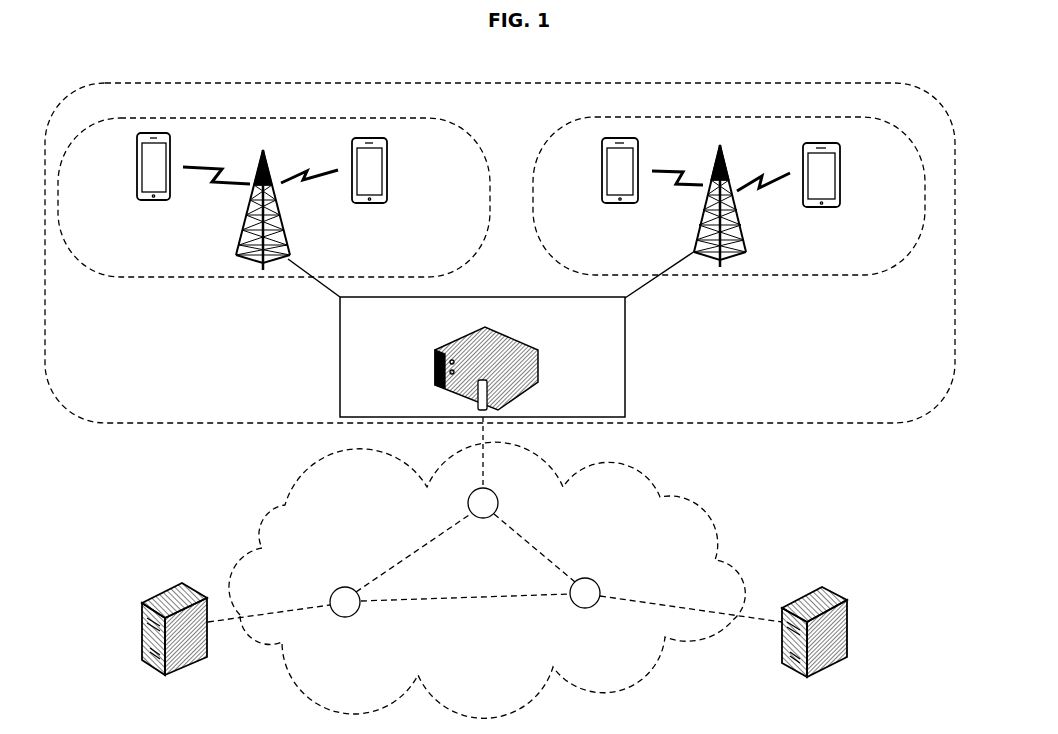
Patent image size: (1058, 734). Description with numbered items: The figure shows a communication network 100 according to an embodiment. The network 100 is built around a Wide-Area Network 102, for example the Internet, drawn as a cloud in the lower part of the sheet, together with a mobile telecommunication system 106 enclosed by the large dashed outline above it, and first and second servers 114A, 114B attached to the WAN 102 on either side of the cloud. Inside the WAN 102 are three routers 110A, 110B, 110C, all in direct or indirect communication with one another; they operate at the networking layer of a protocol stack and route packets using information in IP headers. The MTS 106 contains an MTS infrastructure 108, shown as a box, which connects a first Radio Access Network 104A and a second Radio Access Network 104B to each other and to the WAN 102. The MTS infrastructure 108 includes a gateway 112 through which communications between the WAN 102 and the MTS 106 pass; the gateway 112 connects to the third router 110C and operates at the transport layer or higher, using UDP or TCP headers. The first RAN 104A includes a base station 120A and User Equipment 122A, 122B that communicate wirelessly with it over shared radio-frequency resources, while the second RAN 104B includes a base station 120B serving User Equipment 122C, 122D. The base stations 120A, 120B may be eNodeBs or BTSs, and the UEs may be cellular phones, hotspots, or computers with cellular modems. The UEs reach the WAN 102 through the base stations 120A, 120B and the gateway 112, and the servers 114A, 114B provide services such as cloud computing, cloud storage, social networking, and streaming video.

The communication network 100 is at (181, 63).
The Wide-Area Network 102 is at (745, 492).
The first Radio Access Network 104A is at (342, 118).
The second Radio Access Network 104B is at (787, 117).
The mobile telecommunication system 106 is at (887, 428).
The MTS infrastructure 108 is at (625, 341).
The first router 110A is at (334, 592).
The second router 110B is at (600, 585).
The third router 110C is at (470, 510).
The gateway 112 is at (434, 360).
The first server 114A is at (142, 640).
The second server 114B is at (848, 627).
The first base station 120A is at (282, 221).
The second base station 120B is at (738, 222).
The User Equipment 122A is at (137, 178).
The User Equipment 122B is at (387, 166).
The User Equipment 122C is at (602, 176).
The User Equipment 122D is at (840, 172).